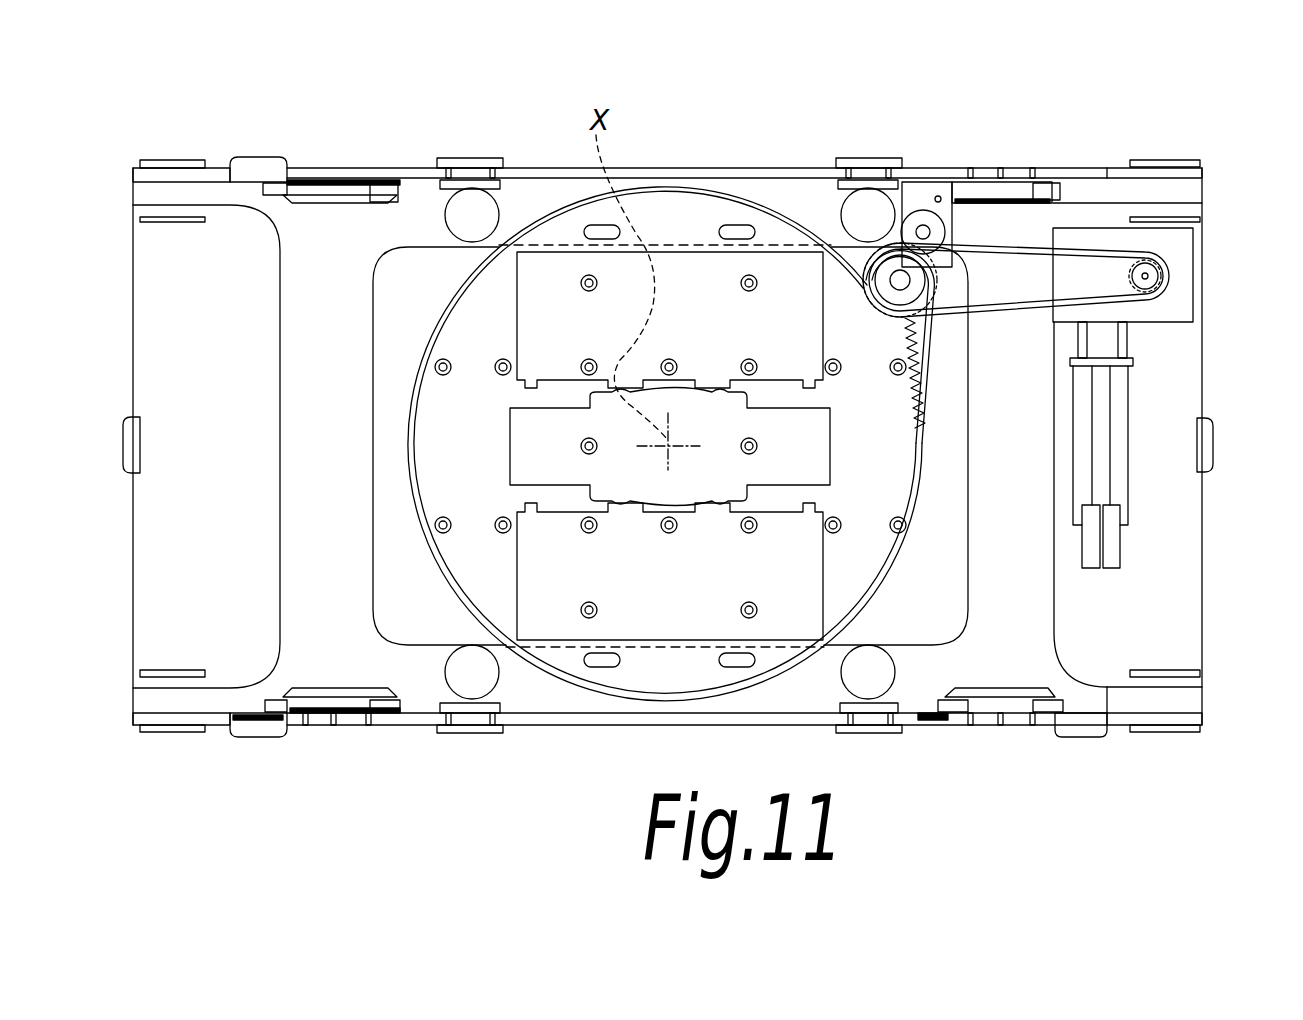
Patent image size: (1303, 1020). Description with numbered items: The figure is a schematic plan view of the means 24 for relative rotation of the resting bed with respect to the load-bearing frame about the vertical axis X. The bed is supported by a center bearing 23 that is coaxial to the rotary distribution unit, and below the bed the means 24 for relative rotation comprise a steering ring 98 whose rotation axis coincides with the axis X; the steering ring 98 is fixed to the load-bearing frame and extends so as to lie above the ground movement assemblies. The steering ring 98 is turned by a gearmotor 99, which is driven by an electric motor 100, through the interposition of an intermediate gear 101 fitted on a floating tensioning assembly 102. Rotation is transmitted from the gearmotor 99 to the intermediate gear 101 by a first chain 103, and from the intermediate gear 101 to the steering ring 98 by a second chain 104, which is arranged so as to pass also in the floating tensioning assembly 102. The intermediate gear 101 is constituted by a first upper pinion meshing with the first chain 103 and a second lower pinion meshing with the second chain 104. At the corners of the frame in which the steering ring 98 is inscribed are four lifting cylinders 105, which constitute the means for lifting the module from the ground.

The center bearing 23 is at (540, 725).
The means for relative rotation 24 is at (963, 237).
The steering ring 98 is at (490, 554).
The gearmotor 99 is at (1177, 292).
The electric motor 100 is at (1118, 444).
The intermediate gear 101 is at (900, 273).
The floating tensioning assembly 102 is at (947, 190).
The first chain 103 is at (1093, 253).
The second chain 104 is at (932, 365).
The lifting cylinders 105 is at (472, 212).